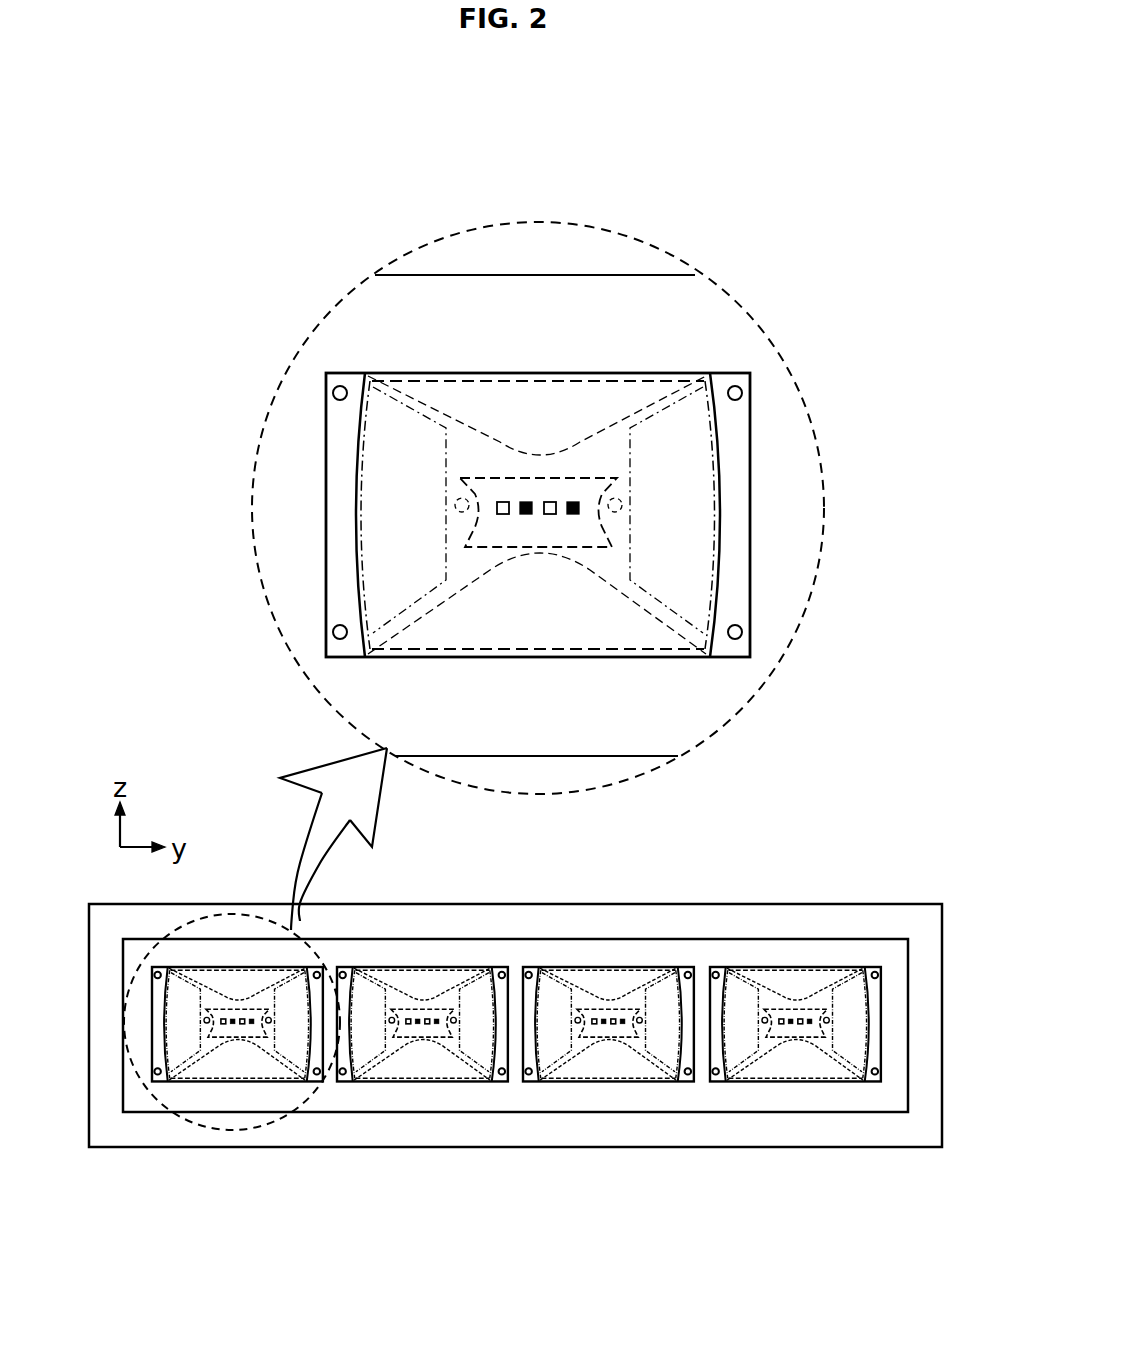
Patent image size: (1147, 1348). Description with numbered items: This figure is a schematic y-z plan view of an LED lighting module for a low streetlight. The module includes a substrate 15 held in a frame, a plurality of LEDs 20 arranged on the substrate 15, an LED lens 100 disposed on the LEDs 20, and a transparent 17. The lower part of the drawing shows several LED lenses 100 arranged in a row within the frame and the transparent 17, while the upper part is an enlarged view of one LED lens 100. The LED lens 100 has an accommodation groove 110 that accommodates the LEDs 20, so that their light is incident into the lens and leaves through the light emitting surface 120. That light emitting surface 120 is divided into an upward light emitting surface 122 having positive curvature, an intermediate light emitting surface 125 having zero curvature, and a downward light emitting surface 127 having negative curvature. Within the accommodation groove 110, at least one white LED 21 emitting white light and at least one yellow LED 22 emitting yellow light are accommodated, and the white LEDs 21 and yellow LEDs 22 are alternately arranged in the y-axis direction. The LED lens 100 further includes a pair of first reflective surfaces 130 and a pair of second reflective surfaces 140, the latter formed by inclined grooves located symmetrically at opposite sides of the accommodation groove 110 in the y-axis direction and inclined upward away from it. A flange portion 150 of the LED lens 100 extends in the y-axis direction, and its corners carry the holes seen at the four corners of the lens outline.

The substrate 15 is at (157, 1113).
The transparent 17 is at (123, 1147).
The LEDs 20 is at (516, 678).
The white LED 21 is at (502, 502).
The yellow LED 22 is at (525, 502).
The LED lens 100 is at (538, 705).
The accommodation groove 110 is at (540, 530).
The light emitting surface 120 is at (180, 425).
The upward light emitting surface 122 is at (355, 410).
The intermediate light emitting surface 125 is at (358, 497).
The downward light emitting surface 127 is at (355, 605).
The first reflective surfaces 130 is at (617, 393).
The second reflective surfaces 140 is at (407, 433).
The flange portion 150 is at (333, 615).